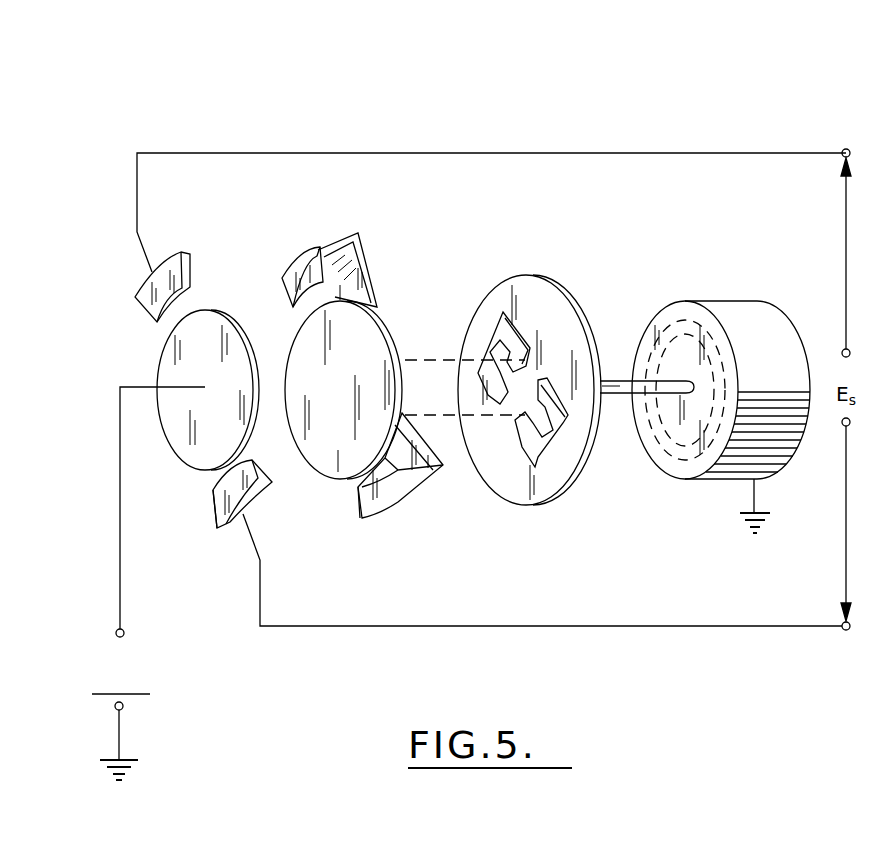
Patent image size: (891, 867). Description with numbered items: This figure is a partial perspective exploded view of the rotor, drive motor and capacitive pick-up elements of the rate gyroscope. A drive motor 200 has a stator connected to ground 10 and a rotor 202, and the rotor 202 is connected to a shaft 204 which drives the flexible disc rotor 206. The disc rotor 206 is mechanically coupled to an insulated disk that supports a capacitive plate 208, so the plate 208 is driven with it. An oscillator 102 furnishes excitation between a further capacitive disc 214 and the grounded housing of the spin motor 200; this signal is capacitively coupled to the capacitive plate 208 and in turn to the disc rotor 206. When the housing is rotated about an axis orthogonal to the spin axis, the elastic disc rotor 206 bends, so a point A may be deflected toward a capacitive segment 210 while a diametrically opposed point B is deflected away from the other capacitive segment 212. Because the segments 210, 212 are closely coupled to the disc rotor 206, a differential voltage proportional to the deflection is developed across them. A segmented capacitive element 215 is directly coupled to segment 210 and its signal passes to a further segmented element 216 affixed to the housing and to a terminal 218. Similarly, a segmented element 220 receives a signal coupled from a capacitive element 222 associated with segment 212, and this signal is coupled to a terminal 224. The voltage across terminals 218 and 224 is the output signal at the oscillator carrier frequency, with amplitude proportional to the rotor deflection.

The ground 10 is at (119, 742).
The oscillator 102 is at (121, 671).
The drive motor 200 is at (708, 478).
The rotor 202 is at (688, 330).
The shaft 204 is at (618, 398).
The flexible disc rotor 206 is at (571, 278).
The capacitive plate 208 is at (392, 338).
The capacitive segment 210 is at (375, 272).
The capacitive segment 212 is at (432, 450).
The capacitive disc 214 is at (162, 376).
The segmented capacitive element 215 is at (290, 265).
The segmented element 216 is at (185, 252).
The terminal 218 is at (845, 149).
The segmented element 220 is at (212, 513).
The capacitive element 222 is at (368, 516).
The terminal 224 is at (844, 630).